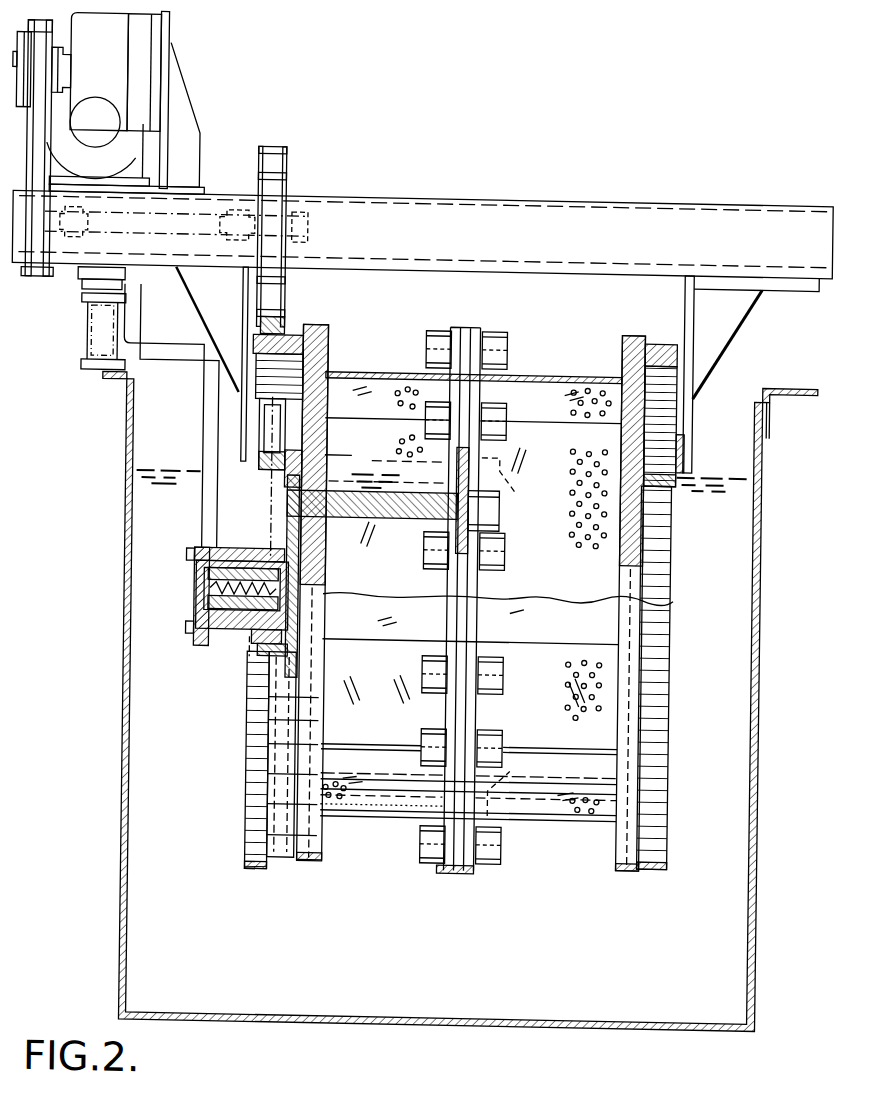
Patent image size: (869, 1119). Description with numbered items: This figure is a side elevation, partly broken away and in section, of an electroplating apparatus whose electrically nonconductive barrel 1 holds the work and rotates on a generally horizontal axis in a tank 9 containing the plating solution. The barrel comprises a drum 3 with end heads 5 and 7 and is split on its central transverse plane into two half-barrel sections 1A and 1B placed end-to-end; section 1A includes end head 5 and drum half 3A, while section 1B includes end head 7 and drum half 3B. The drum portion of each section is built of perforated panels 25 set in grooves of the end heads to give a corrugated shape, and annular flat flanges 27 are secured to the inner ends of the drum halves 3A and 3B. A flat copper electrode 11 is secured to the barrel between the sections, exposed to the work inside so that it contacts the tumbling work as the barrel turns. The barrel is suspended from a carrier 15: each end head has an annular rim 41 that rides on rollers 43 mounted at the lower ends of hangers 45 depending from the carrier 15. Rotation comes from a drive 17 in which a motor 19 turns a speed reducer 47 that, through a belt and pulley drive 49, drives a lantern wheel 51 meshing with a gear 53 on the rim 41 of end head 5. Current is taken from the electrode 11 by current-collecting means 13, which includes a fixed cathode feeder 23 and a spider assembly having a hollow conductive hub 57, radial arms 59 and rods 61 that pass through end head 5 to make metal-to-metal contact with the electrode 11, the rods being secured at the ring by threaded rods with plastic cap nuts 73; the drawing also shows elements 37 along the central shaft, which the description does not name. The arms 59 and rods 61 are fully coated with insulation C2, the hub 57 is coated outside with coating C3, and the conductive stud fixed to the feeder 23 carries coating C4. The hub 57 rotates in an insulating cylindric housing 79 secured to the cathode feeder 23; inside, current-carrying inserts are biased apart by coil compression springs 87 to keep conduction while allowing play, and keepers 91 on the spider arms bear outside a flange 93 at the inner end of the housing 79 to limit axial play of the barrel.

The barrel 1 is at (662, 884).
The half-barrel section 1A is at (236, 833).
The half-barrel section 1B is at (684, 846).
The drum 3 is at (543, 326).
The drum half 3A is at (360, 364).
The drum half 3B is at (540, 360).
The end head 5 is at (316, 330).
The end head 7 is at (632, 333).
The tank 9 is at (347, 1024).
The electrode 11 is at (459, 876).
The current-collecting means 13 is at (313, 455).
The carrier 15 is at (548, 188).
The drive 17 is at (172, 28).
The motor 19 is at (135, 145).
The cathode feeder 23 is at (200, 416).
The panels 25 is at (372, 820).
The annular flat flanges 27 is at (447, 875).
The rollers 37 is at (440, 334).
The annular rim 41 is at (287, 338).
The rollers 43 is at (253, 478).
The hangers 45 is at (240, 300).
The speed reducer 47 is at (135, 74).
The belt and pulley drive 49 is at (34, 290).
The lantern wheel 51 is at (286, 154).
The gear 53 is at (258, 333).
The hub 57 is at (204, 578).
The arms 59 is at (285, 452).
The rods 61 is at (381, 520).
The plastic cap nuts 73 is at (498, 508).
The cylindric housing 79 is at (226, 554).
The coil compression springs 87 is at (210, 598).
The keepers 91 is at (250, 540).
The flange 93 is at (285, 648).
The coating C2 is at (286, 497).
The coating C3 is at (245, 633).
The coating C4 is at (197, 520).